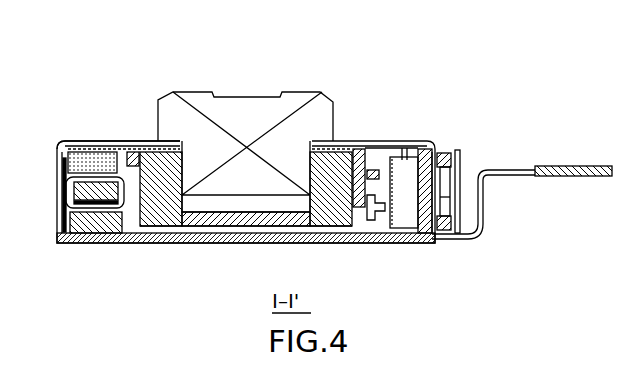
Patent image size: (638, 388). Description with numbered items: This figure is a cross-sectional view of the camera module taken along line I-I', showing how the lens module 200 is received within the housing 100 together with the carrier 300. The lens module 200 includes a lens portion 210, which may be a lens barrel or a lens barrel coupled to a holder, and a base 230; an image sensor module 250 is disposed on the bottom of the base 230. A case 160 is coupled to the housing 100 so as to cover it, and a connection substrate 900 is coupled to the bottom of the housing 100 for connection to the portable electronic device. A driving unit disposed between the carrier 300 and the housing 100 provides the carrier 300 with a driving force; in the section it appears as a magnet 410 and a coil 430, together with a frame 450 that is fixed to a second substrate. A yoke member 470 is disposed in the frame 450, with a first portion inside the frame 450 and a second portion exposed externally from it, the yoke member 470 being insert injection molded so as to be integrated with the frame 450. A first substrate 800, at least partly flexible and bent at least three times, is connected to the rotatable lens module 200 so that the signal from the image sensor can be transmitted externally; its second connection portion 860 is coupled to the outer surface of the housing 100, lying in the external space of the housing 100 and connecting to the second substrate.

The housing 100 is at (95, 243).
The case 160 is at (72, 143).
The lens module 200 is at (236, 117).
The lens portion 210 is at (301, 100).
The base 230 is at (335, 160).
The image sensor module 250 is at (258, 243).
The carrier 300 is at (365, 157).
The magnet 410 is at (106, 158).
The coil 430 is at (66, 173).
The frame 450 is at (76, 190).
The yoke member 470 is at (67, 203).
The first substrate 800 is at (522, 179).
The second connection portion 860 is at (460, 160).
The connection substrate 900 is at (382, 243).